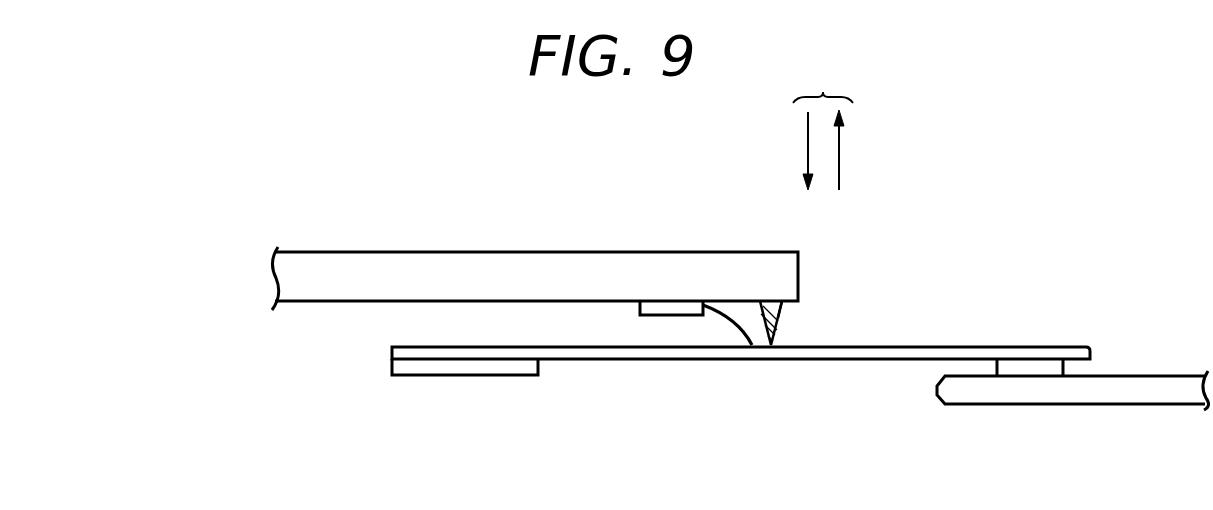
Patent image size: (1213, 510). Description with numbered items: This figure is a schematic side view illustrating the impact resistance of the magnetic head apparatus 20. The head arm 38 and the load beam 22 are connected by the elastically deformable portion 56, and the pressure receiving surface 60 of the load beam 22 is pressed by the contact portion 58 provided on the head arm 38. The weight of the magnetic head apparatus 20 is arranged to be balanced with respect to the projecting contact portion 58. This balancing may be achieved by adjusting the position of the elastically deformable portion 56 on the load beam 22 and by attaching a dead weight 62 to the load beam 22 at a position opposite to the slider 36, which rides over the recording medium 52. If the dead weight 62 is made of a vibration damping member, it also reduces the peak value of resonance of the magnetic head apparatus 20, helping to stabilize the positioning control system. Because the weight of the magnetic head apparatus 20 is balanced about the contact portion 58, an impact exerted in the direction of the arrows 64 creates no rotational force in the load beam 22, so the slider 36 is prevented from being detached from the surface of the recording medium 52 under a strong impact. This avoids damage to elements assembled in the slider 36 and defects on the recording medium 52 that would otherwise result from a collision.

The magnetic head apparatus 20 is at (888, 387).
The load beam 22 is at (918, 345).
The slider 36 is at (1035, 365).
The head arm 38 is at (555, 258).
The recording medium 52 is at (1148, 383).
The elastically deformable portion 56 is at (728, 321).
The contact portion 58 is at (778, 318).
The pressure receiving surface 60 is at (772, 355).
The dead weight 62 is at (454, 368).
The arrows 64 is at (823, 126).